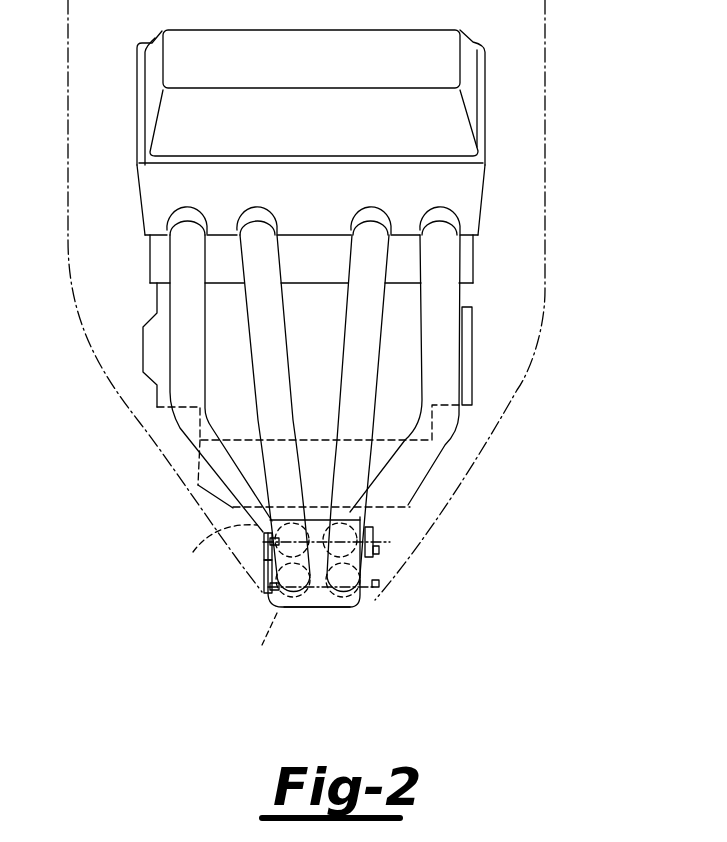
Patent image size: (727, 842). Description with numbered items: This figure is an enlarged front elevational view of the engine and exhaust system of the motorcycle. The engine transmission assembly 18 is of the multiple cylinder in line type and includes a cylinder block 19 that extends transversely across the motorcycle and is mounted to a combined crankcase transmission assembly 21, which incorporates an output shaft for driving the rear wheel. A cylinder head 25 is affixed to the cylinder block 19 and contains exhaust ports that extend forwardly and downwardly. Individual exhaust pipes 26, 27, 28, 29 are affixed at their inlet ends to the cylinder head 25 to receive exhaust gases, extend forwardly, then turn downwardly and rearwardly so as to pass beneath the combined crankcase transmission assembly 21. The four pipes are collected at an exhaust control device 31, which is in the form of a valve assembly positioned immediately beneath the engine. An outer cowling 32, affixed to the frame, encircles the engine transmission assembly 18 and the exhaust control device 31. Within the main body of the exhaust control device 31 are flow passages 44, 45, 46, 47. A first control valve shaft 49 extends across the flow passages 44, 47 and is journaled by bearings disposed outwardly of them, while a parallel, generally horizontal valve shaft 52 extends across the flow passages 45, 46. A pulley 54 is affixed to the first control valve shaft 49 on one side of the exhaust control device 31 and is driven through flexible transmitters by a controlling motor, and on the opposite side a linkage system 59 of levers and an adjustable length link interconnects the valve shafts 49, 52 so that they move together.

The engine transmission assembly 18 is at (487, 194).
The cylinder block 19 is at (478, 246).
The combined crankcase transmission assembly 21 is at (472, 362).
The cylinder head 25 is at (483, 165).
The exhaust pipe 26 is at (460, 262).
The exhaust pipe 27 is at (383, 320).
The exhaust pipe 28 is at (290, 341).
The exhaust pipe 29 is at (207, 355).
The exhaust control device 31 is at (321, 620).
The outer cowling 32 is at (548, 243).
The flow passage 44 is at (370, 515).
The flow passage 45 is at (353, 607).
The flow passage 46 is at (264, 643).
The flow passage 47 is at (209, 550).
The first control valve shaft 49 is at (373, 540).
The valve shaft 52 is at (379, 585).
The pulley 54 is at (379, 550).
The linkage system 59 is at (263, 570).